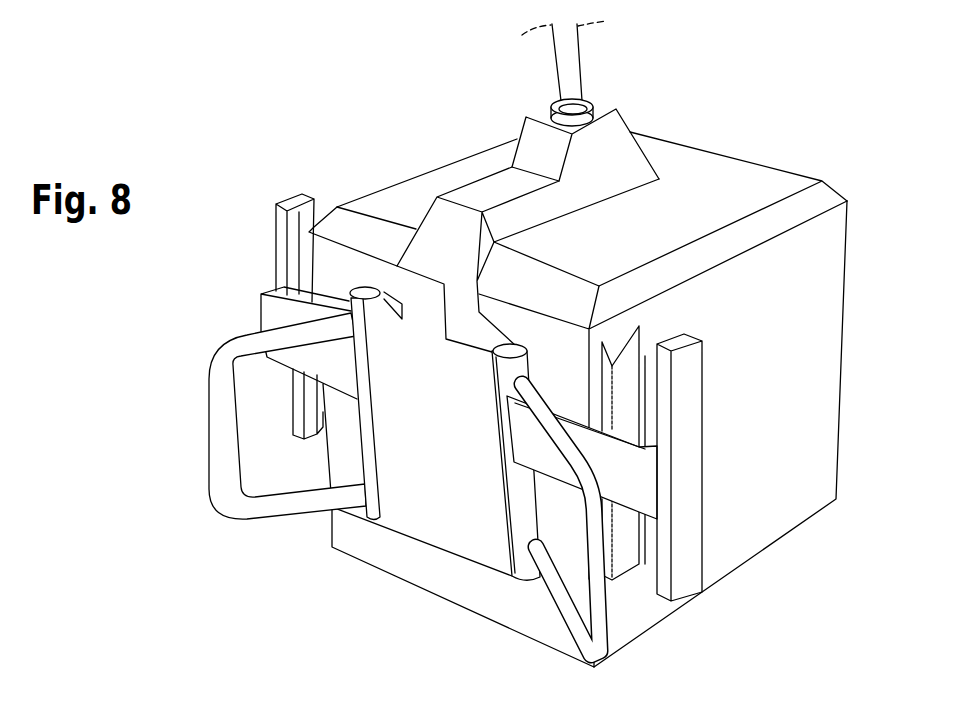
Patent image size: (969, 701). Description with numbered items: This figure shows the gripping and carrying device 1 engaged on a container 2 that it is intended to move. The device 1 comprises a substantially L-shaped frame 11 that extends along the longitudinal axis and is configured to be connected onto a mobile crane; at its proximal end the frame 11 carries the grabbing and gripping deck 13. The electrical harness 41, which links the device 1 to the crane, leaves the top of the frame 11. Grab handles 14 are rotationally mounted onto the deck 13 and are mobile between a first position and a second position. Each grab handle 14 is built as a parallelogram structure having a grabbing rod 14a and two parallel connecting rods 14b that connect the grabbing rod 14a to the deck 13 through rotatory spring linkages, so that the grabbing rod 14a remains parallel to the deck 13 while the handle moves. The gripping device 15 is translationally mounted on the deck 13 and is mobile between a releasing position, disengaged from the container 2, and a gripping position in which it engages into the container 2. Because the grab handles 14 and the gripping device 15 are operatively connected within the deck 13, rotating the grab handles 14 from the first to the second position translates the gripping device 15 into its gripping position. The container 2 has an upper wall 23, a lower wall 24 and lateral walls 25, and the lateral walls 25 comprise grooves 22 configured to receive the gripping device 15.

The gripping and carrying device 1 is at (534, 344).
The container 2 is at (599, 380).
The frame 11 is at (493, 190).
The grabbing and gripping deck 13 is at (463, 520).
The grab handles 14 is at (272, 404).
The grabbing rod 14a is at (212, 455).
The connecting rods 14b is at (252, 330).
The gripping device 15 is at (683, 472).
The grooves 22 is at (623, 387).
The upper wall 23 is at (713, 183).
The lower wall 24 is at (797, 533).
The lateral walls 25 is at (783, 298).
The electrical harness 41 is at (573, 70).